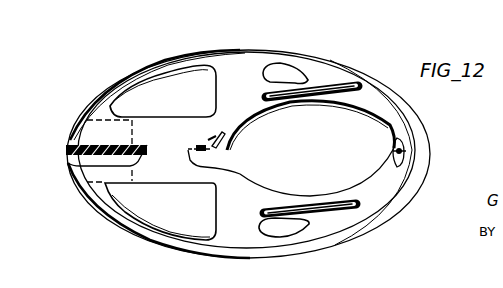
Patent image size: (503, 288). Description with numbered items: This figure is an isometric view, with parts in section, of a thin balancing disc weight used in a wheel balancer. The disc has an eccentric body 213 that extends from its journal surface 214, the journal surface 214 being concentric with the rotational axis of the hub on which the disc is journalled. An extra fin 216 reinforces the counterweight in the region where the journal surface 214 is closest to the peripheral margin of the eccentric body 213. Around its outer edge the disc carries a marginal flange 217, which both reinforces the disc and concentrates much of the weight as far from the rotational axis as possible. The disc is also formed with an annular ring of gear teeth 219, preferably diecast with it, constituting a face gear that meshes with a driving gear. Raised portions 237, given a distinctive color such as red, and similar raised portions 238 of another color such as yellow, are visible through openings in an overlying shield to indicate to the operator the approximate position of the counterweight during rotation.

The eccentric body 213 is at (108, 104).
The journal surface 214 is at (257, 183).
The extra fin 216 is at (423, 152).
The marginal flange 217 is at (66, 136).
The gear teeth 219 is at (216, 150).
The raised portions 237 is at (322, 82).
The raised portions 238 is at (395, 149).